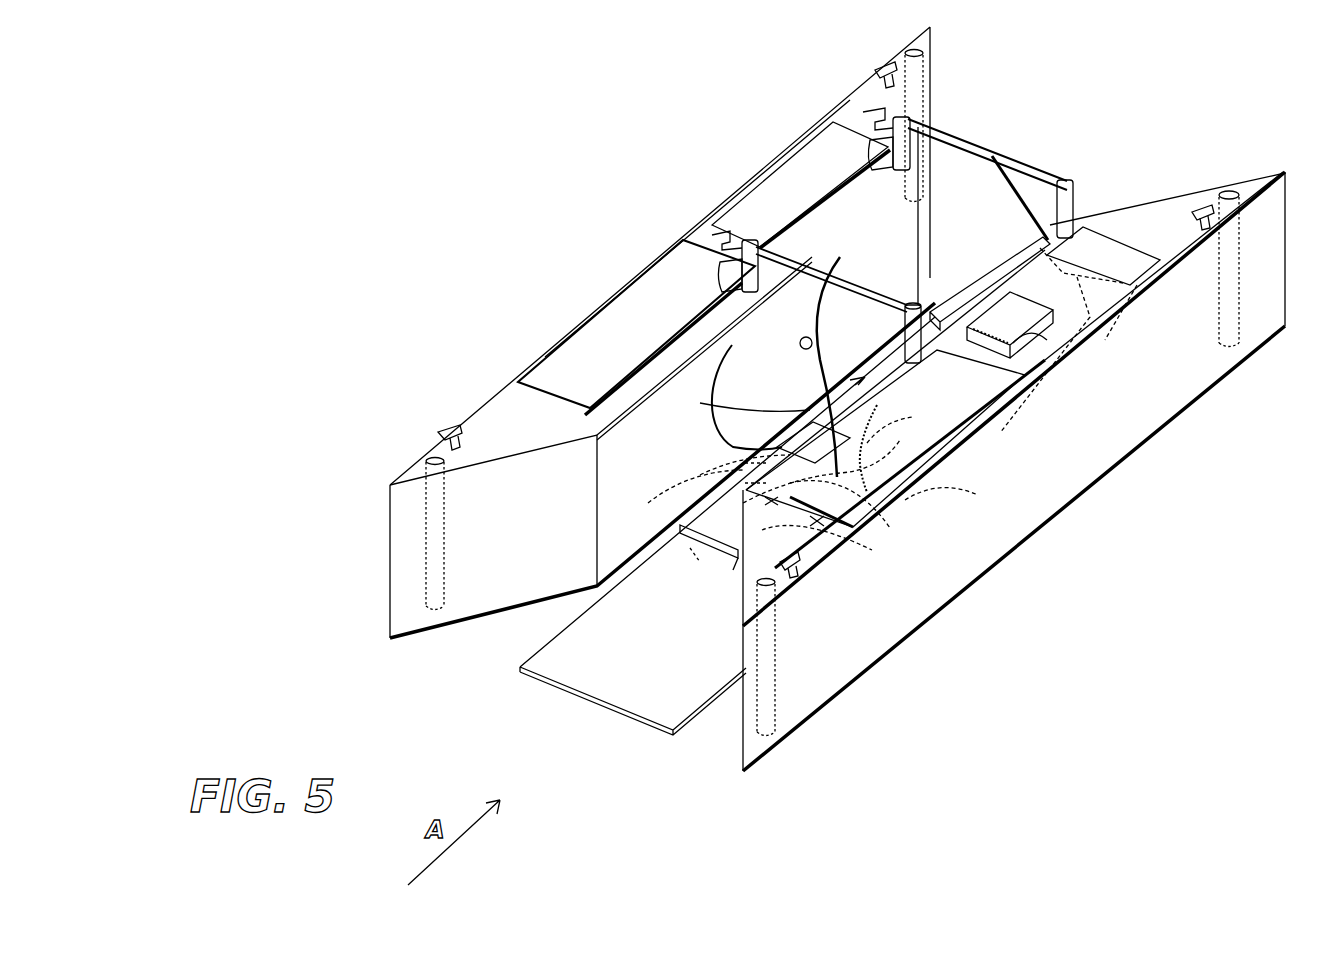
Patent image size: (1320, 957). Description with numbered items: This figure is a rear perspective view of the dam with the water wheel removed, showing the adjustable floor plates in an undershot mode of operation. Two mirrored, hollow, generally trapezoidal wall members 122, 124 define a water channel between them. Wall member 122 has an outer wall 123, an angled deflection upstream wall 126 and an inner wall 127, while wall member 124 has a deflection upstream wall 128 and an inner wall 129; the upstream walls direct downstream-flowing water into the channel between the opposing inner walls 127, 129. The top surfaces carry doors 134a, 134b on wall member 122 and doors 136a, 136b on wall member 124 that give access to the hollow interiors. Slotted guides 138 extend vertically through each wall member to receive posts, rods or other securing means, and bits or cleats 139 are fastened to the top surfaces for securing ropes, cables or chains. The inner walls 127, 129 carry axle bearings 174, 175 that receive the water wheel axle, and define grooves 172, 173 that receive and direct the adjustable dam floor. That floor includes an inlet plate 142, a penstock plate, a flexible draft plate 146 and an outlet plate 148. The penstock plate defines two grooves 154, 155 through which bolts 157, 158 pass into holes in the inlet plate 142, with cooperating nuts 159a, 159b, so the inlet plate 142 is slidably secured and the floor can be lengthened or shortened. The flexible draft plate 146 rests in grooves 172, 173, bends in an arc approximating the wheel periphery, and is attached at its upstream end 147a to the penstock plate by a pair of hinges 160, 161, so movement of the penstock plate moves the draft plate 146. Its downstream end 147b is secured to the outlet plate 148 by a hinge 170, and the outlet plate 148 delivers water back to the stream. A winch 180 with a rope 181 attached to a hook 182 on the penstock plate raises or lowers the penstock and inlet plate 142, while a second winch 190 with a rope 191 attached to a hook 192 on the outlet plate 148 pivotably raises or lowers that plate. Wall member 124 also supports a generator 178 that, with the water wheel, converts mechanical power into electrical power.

The wall member 122 is at (328, 575).
The outer wall 123 is at (390, 600).
The wall member 124 is at (856, 658).
The deflection upstream wall 126 is at (480, 598).
The inner wall 127 is at (878, 258).
The deflection upstream wall 128 is at (742, 710).
The inner wall 129 is at (1000, 277).
The door 134a is at (677, 260).
The door 134b is at (822, 158).
The door 136a is at (1023, 373).
The door 136b is at (1102, 253).
The slotted guide 138 is at (425, 462).
The bit or cleat 139 is at (440, 432).
The inlet plate 142 is at (712, 623).
The flexible draft plate 146 is at (823, 390).
The upstream end 147a is at (730, 387).
The downstream end 147b is at (905, 320).
The outlet plate 148 is at (977, 293).
The groove 154 is at (709, 552).
The groove 155 is at (736, 532).
The bolt 157 is at (733, 540).
The bolt 158 is at (890, 530).
The nut 159a is at (680, 494).
The nut 159b is at (875, 550).
The hinge 160 is at (797, 423).
The hinge 161 is at (957, 502).
The hinge 170 is at (935, 295).
The groove 172 is at (712, 408).
The groove 173 is at (940, 420).
The axle bearing 174 is at (797, 350).
The axle bearing 175 is at (945, 420).
The generator 178 is at (1080, 385).
The winch 180 is at (750, 243).
The rope 181 is at (722, 296).
The hook 182 is at (793, 472).
The winch 190 is at (982, 145).
The rope 191 is at (1005, 190).
The hook 192 is at (1107, 343).